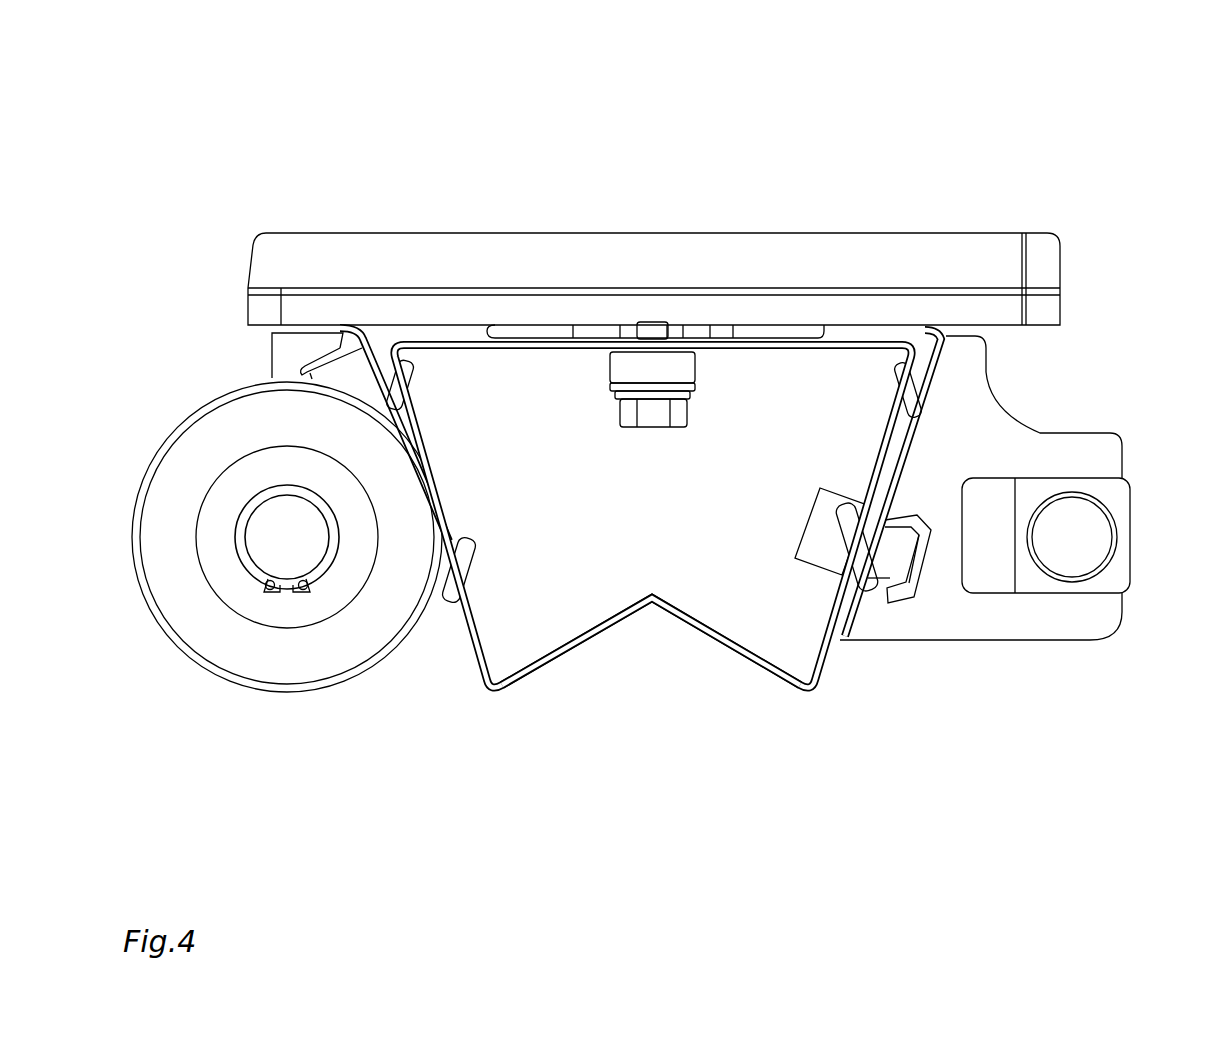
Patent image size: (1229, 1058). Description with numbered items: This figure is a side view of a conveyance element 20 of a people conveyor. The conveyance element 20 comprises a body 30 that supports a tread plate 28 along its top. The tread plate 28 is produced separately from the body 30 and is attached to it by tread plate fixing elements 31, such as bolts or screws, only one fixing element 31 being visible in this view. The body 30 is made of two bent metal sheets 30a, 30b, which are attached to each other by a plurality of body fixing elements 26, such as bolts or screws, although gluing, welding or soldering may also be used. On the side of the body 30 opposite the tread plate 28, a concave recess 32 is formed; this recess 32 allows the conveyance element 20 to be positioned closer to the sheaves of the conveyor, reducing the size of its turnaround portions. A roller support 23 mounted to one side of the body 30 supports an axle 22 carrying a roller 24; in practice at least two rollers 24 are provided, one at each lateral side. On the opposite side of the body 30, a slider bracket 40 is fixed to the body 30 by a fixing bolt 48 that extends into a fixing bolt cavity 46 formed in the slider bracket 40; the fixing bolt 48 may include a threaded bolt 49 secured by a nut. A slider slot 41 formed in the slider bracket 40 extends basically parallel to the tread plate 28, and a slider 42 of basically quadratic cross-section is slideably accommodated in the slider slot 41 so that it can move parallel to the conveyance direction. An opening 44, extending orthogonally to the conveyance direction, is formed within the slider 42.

The conveyance element 20 is at (1143, 92).
The axle 22 is at (274, 549).
The roller support 23 is at (441, 606).
The roller 24 is at (287, 515).
The body fixing element 26 is at (421, 414).
The tread plate 28 is at (1069, 209).
The body 30 is at (652, 577).
The sheet 30a is at (473, 346).
The sheet 30b is at (622, 606).
The tread plate fixing element 31 is at (617, 445).
The concave recess 32 is at (647, 683).
The slider bracket 40 is at (1018, 520).
The slider slot 41 is at (981, 520).
The slider 42 is at (1146, 480).
The opening 44 is at (1100, 549).
The fixing bolt cavity 46 is at (897, 622).
The fixing bolt 48 is at (897, 547).
The threaded bolt 49 is at (808, 555).